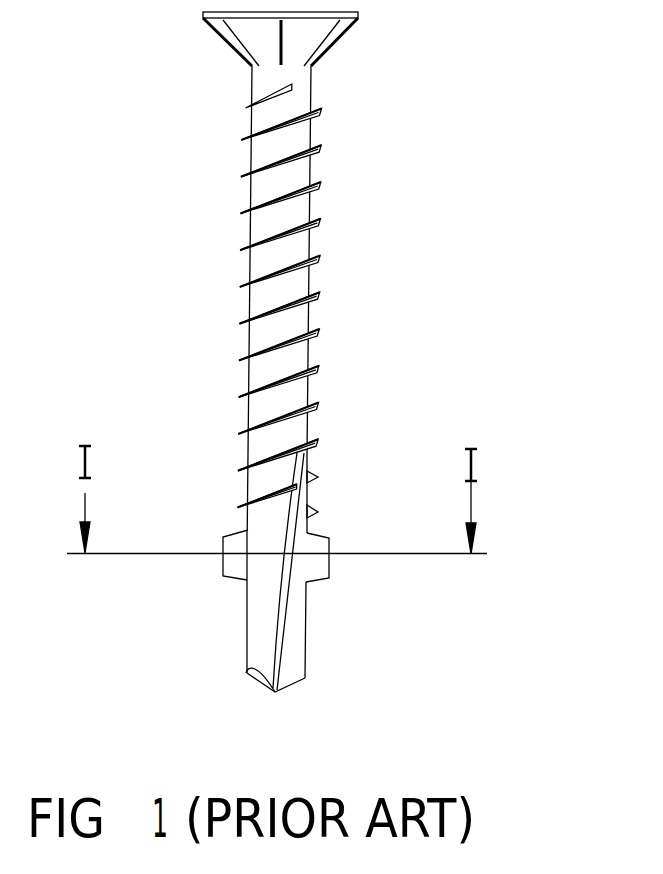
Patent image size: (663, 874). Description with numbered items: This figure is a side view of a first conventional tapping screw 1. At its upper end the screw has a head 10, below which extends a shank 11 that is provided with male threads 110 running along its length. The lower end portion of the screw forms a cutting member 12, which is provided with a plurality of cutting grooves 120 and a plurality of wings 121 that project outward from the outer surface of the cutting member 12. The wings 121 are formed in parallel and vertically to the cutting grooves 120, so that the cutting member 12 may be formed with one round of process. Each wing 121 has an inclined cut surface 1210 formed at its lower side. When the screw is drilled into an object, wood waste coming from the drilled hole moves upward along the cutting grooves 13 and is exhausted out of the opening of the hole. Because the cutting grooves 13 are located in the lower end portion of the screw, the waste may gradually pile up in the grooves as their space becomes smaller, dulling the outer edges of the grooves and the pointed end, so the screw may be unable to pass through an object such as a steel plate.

The tapping screw 1 is at (179, 184).
The head 10 is at (220, 40).
The shank 11 is at (267, 298).
The male threads 110 is at (279, 296).
The cutting member 12 is at (277, 584).
The cutting grooves 120 is at (317, 634).
The wings 121 is at (315, 543).
The inclined cut surface 1210 is at (235, 581).
The cutting grooves 13 is at (278, 693).